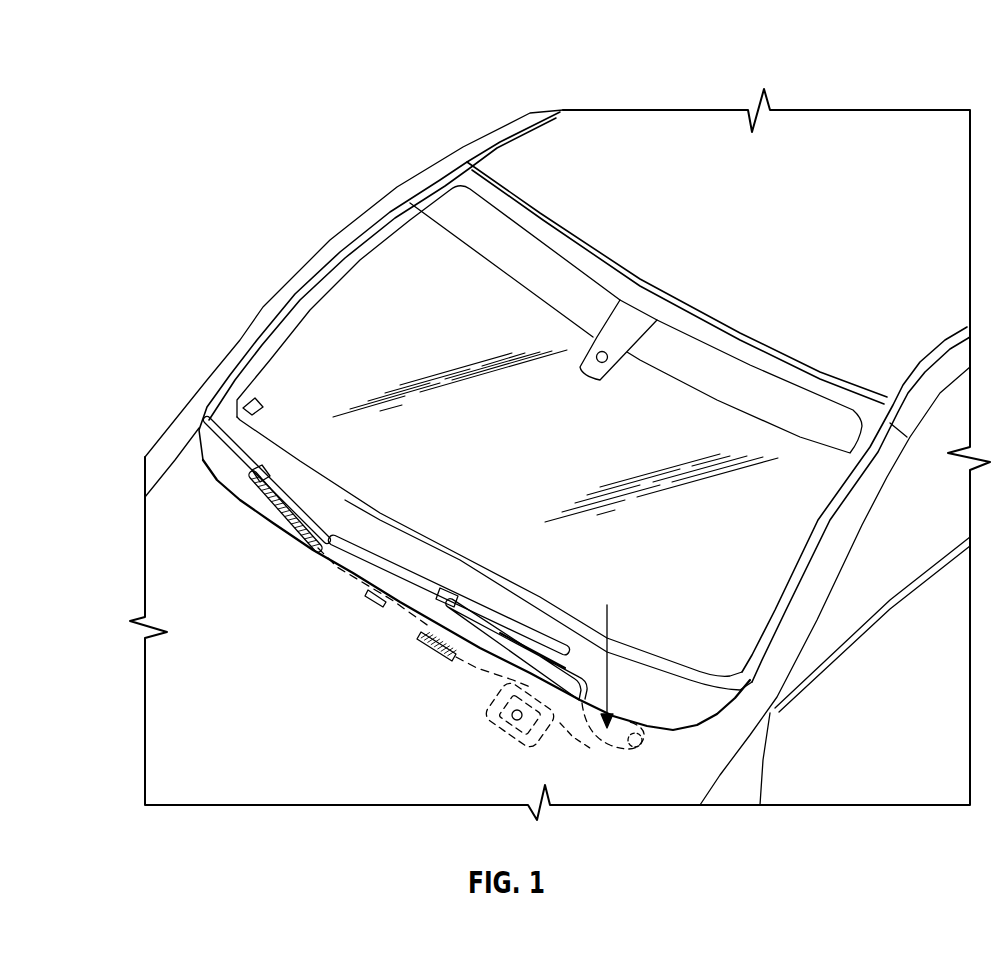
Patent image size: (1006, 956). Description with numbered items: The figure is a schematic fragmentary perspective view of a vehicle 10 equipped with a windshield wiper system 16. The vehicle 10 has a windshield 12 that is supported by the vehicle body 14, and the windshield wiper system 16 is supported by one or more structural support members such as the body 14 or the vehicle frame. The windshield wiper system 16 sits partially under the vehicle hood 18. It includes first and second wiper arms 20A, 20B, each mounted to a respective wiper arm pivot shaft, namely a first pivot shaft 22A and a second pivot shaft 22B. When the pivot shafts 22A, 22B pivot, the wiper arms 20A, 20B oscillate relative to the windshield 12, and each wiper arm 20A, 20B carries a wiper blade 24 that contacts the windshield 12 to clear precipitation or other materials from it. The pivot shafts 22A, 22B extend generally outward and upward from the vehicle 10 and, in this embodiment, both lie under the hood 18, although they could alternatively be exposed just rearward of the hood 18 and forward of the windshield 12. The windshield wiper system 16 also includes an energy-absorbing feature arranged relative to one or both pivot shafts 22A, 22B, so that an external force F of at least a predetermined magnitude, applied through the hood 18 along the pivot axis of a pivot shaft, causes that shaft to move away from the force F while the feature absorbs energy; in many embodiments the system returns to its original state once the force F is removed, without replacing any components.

The vehicle 10 is at (226, 232).
The windshield 12 is at (367, 307).
The vehicle body 14 is at (755, 763).
The windshield wiper system 16 is at (501, 743).
The vehicle hood 18 is at (180, 552).
The first wiper arm 20A is at (568, 672).
The second wiper arm 20B is at (338, 573).
The first pivot shaft 22A is at (614, 727).
The second pivot shaft 22B is at (430, 638).
The wiper blade 24 is at (280, 487).
The external force F is at (607, 630).